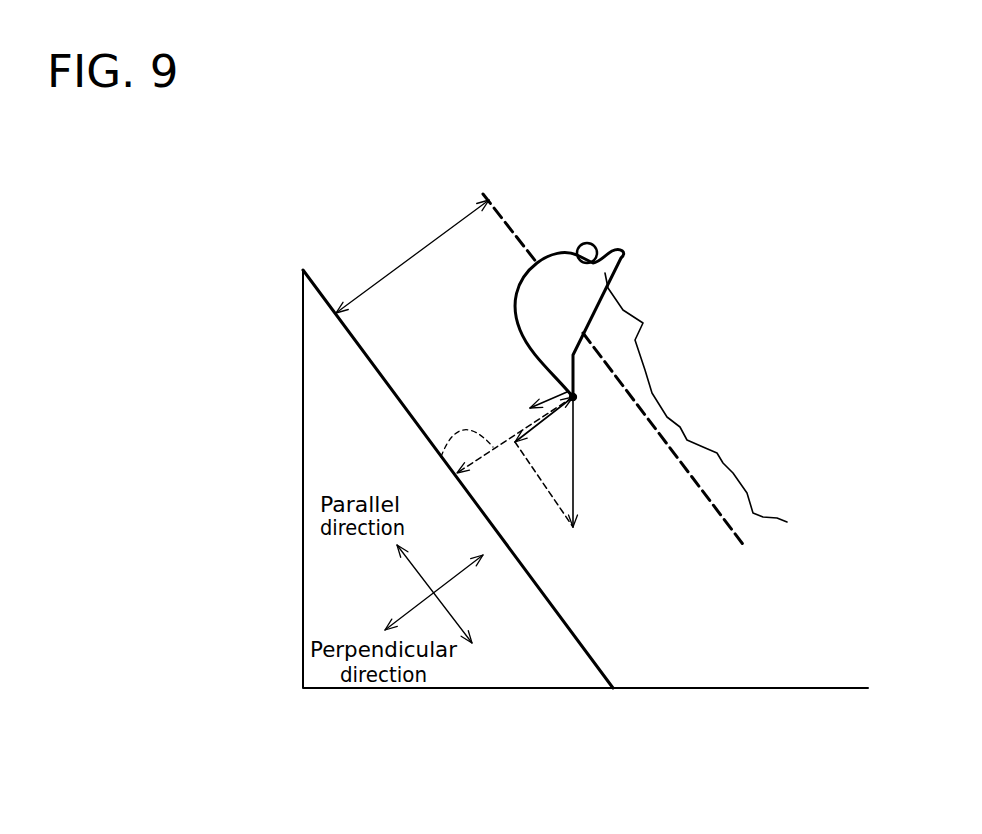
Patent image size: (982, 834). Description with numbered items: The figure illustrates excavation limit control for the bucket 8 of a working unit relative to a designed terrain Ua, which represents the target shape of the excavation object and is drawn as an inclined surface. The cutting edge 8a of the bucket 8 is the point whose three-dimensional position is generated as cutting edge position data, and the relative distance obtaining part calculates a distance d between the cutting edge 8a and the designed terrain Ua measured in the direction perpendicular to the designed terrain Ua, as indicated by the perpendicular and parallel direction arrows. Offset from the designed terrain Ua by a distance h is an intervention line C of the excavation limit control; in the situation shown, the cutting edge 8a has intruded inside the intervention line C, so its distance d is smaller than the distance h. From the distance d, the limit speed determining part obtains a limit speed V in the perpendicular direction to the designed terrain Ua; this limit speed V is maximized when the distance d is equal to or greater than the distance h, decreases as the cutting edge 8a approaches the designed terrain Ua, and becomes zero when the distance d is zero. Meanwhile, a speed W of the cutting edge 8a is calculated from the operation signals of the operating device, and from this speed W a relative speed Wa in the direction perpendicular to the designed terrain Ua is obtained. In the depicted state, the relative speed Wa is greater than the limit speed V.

The bucket 8 is at (603, 272).
The cutting edge 8a is at (578, 393).
The intervention line C is at (690, 437).
The designed terrain Ua is at (381, 352).
The distance from the intervention line h is at (400, 265).
The limit speed V is at (560, 392).
The speed of the cutting edge W is at (574, 475).
The relative speed Wa is at (536, 427).
The distance d is at (440, 458).